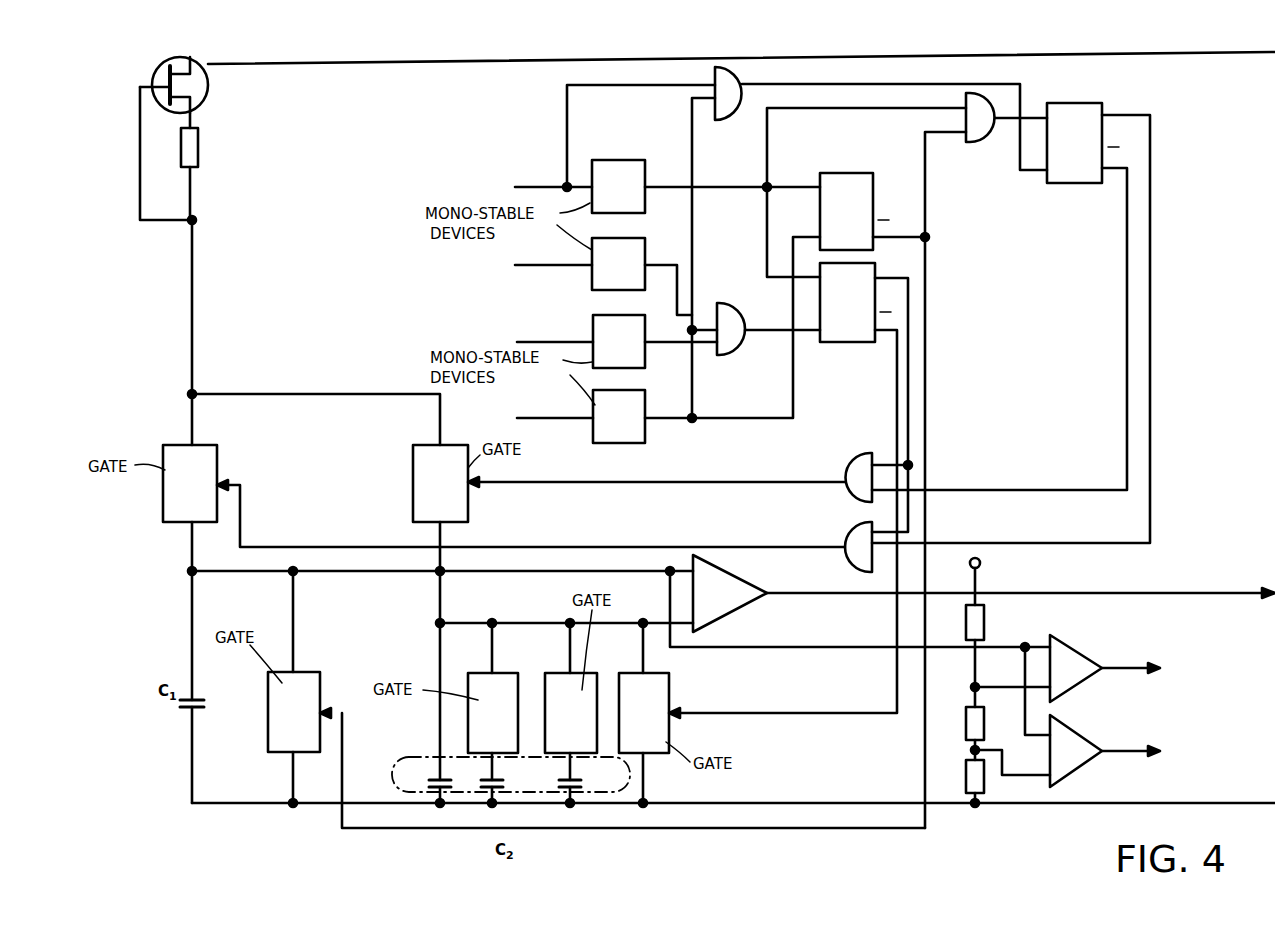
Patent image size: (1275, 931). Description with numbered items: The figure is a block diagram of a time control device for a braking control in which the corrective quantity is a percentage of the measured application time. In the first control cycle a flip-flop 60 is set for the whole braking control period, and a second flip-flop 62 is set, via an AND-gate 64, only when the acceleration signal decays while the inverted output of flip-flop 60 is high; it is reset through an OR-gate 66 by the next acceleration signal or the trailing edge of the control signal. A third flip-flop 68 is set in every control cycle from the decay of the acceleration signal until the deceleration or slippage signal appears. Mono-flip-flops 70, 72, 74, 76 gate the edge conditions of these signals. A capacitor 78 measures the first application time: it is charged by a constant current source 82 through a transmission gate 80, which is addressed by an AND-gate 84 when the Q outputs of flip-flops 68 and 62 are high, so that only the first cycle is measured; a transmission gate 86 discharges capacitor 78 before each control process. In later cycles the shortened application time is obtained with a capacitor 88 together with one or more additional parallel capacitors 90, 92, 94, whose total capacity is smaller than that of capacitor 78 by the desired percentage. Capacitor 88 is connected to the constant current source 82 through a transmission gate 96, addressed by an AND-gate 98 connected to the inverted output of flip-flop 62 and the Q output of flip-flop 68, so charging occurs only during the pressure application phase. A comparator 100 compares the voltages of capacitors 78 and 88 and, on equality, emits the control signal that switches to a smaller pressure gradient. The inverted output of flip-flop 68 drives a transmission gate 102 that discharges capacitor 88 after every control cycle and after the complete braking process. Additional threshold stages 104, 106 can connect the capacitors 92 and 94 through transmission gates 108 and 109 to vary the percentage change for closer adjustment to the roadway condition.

The flip-flop 60 is at (842, 173).
The second flip-flop 62 is at (1075, 184).
The AND-gate 64 is at (975, 136).
The OR-gate 66 is at (726, 114).
The third flip-flop 68 is at (843, 343).
The mono-flip-flop 70 is at (612, 170).
The mono-flip-flop 72 is at (640, 252).
The mono-flip-flop 74 is at (600, 333).
The mono-flip-flop 76 is at (640, 410).
The capacitor 78 is at (198, 707).
The transmission gate 80 is at (218, 468).
The constant current source 82 is at (212, 85).
The AND-gate 84 is at (855, 548).
The transmission gate 86 is at (312, 690).
The capacitor 88 is at (513, 790).
The additional capacitor 90 is at (426, 777).
The additional capacitor 92 is at (500, 782).
The additional capacitor 94 is at (583, 775).
The transmission gate 96 is at (413, 463).
The AND-gate 98 is at (855, 468).
The comparator 100 is at (745, 600).
The transmission gate 102 is at (662, 695).
The threshold stage 104 is at (1070, 660).
The threshold stage 106 is at (1085, 745).
The transmission gate 108 is at (585, 692).
The transmission gate 109 is at (503, 692).